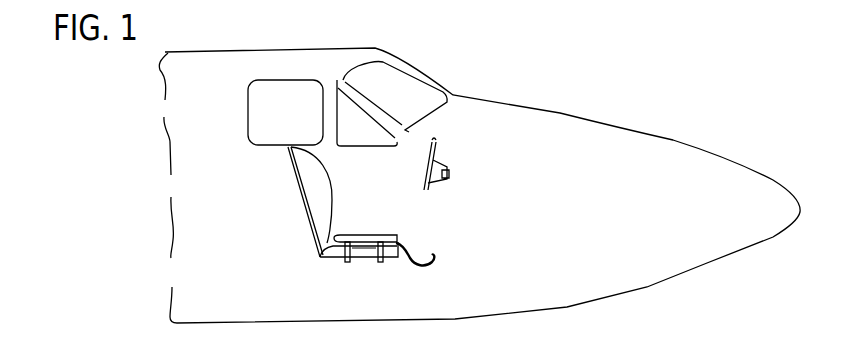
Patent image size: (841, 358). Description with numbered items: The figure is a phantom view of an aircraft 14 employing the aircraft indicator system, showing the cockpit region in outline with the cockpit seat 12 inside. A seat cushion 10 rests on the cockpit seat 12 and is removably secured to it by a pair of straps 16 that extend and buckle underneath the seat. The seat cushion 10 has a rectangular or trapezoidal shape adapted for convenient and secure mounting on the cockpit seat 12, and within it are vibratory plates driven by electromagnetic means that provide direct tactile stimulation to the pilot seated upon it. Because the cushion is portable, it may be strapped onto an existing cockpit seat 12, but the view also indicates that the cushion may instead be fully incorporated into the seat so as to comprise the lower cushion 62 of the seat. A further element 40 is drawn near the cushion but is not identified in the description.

The seat cushion 10 is at (395, 229).
The cockpit seat 12 is at (315, 246).
The aircraft 14 is at (507, 100).
The straps 16 is at (388, 274).
The hook 40 is at (425, 273).
The lower cushion 62 is at (370, 250).